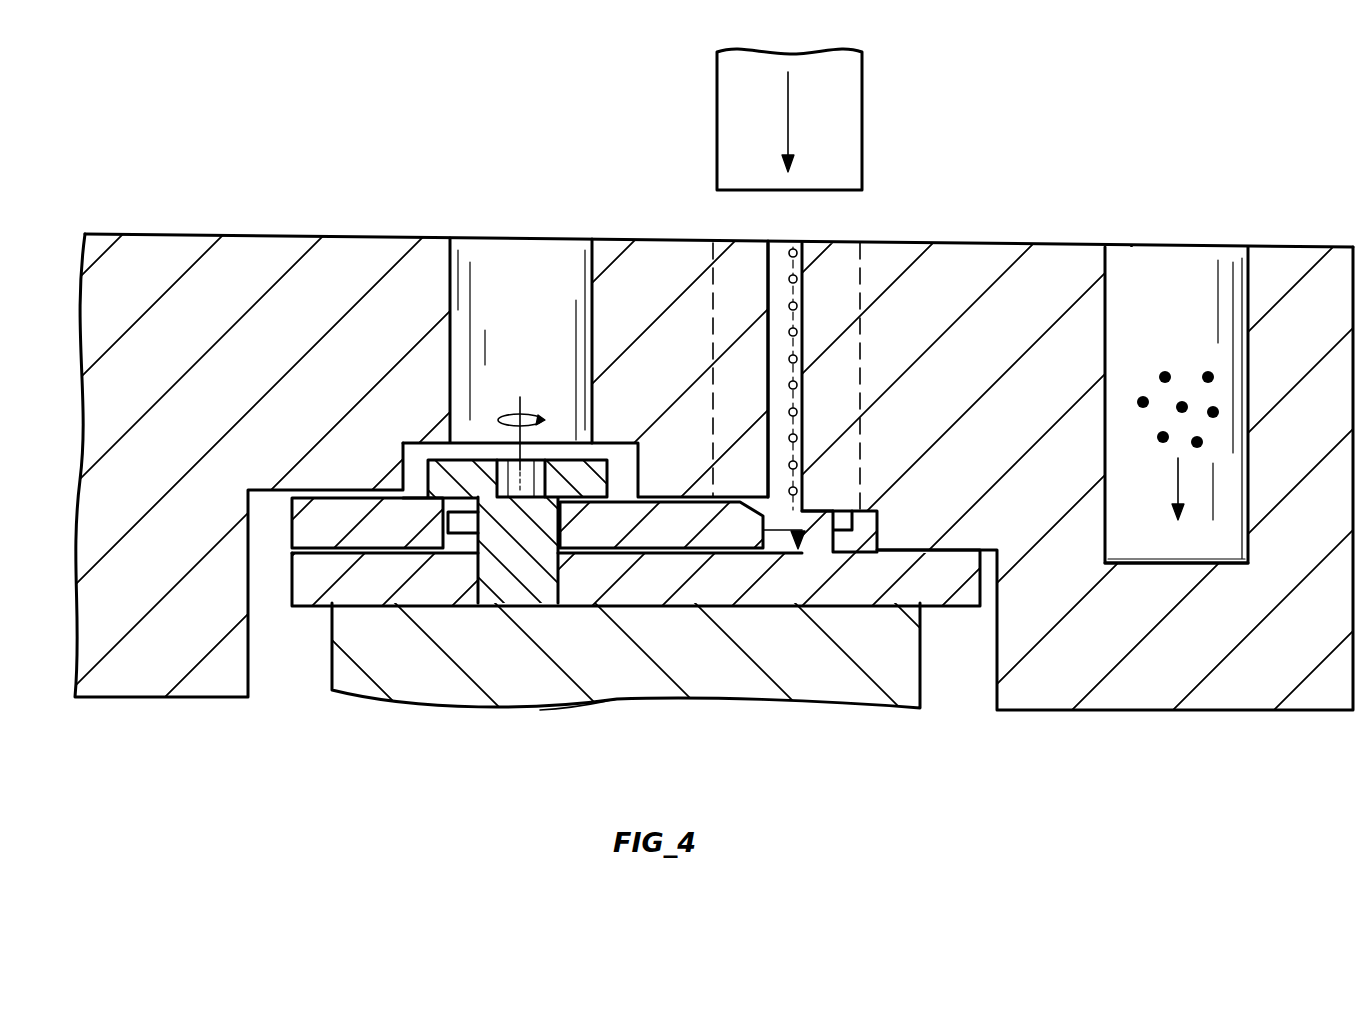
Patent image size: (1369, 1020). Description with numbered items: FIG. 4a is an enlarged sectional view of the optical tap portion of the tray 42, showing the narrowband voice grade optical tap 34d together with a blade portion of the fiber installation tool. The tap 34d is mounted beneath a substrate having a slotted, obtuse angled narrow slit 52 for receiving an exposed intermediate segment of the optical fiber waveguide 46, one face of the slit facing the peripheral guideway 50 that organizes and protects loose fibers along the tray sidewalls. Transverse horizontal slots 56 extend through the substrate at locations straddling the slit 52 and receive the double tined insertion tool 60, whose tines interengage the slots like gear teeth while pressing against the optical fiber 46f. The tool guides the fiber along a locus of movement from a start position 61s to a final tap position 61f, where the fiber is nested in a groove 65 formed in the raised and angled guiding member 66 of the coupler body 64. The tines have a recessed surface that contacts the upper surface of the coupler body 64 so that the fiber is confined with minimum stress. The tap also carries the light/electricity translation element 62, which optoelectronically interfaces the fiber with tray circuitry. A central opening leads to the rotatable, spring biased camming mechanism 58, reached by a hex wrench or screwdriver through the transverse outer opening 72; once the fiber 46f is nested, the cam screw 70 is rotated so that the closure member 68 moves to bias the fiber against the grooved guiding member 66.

The narrowband voice grade optical tap 34d is at (684, 716).
The tray 42 is at (1013, 724).
The optical fiber waveguide 46 is at (1166, 372).
The optical fiber waveguide 46f is at (797, 255).
The peripheral guideway 50 is at (1160, 543).
The slit 52 is at (783, 325).
The transverse horizontal slot 56 is at (740, 307).
The camming mechanism 58 is at (543, 467).
The insertion tool 60 is at (745, 105).
The start position 61s is at (778, 245).
The final tap position 61f is at (798, 548).
The light/electricity translation element 62 is at (398, 650).
The coupler body 64 is at (595, 583).
The groove 65 is at (808, 540).
The guiding member 66 is at (840, 510).
The closure member 68 is at (338, 525).
The cam screw 70 is at (440, 475).
The transverse outer opening 72 is at (465, 310).